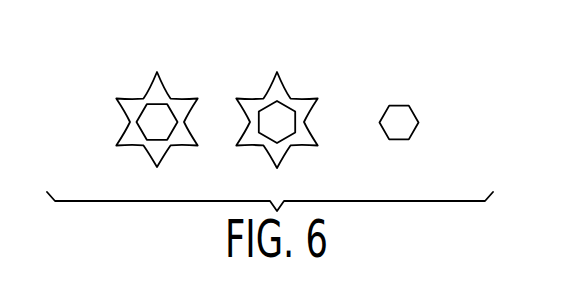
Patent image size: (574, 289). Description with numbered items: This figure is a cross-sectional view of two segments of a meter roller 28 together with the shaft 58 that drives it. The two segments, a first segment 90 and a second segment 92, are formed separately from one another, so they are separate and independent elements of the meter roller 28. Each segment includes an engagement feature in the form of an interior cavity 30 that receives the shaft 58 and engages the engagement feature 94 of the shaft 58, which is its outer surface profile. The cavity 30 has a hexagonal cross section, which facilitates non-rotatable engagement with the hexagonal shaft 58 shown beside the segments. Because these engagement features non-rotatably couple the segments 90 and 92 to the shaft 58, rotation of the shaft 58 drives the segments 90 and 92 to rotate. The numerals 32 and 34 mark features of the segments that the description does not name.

The meter roller 28 is at (330, 48).
The interior cavity 30 is at (138, 106).
The tail 32 is at (157, 167).
The arm 34 is at (140, 145).
The first segment 90 is at (132, 118).
The second segment 92 is at (303, 117).
The shaft 58 is at (397, 105).
The engagement feature 94 is at (433, 132).